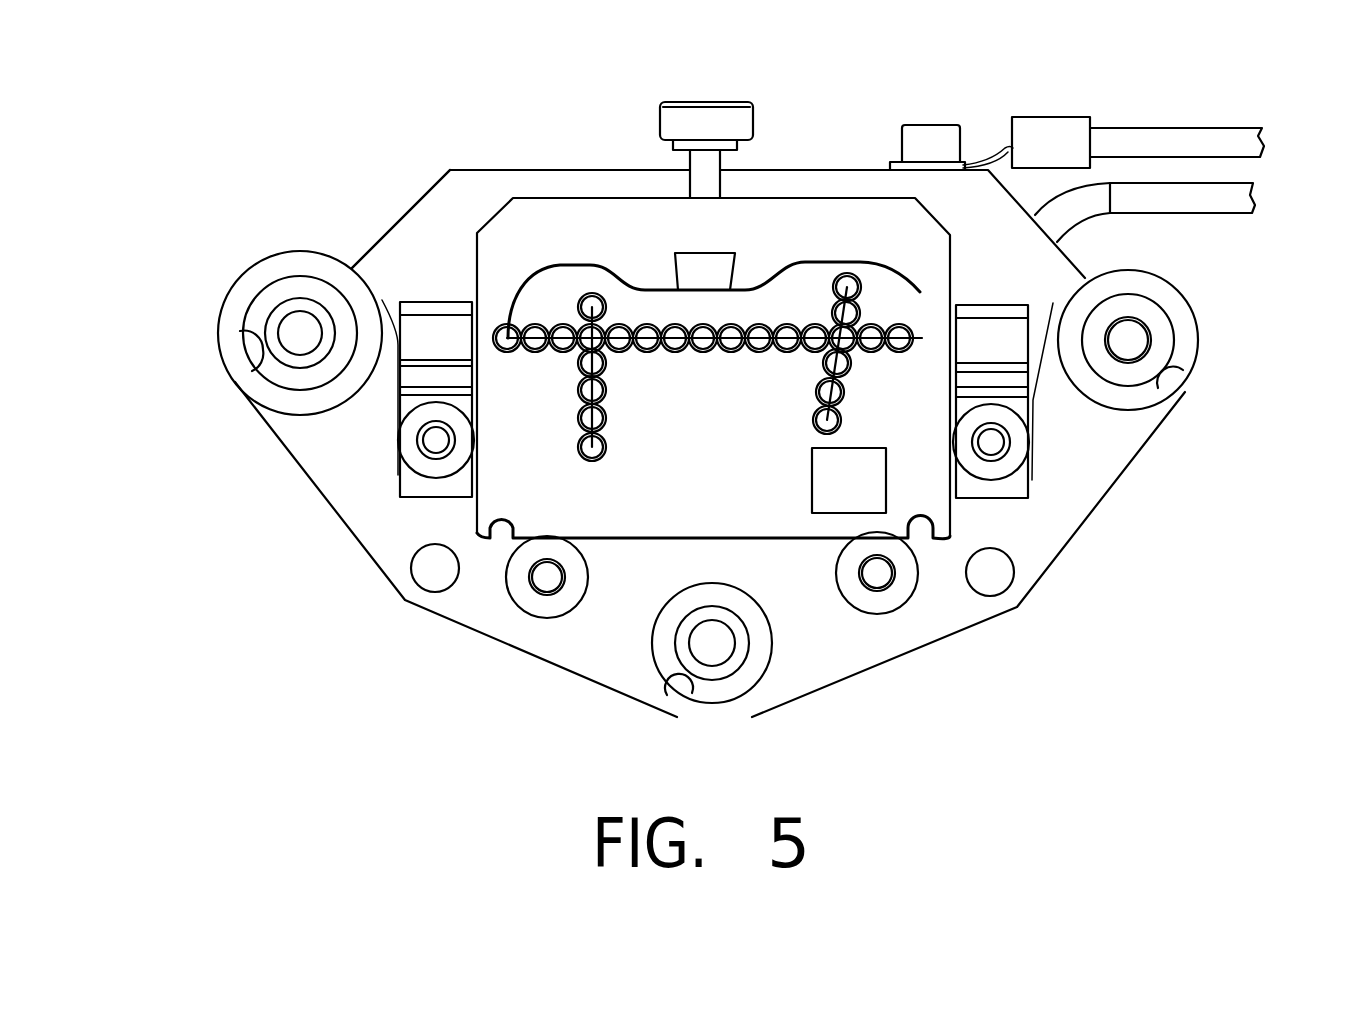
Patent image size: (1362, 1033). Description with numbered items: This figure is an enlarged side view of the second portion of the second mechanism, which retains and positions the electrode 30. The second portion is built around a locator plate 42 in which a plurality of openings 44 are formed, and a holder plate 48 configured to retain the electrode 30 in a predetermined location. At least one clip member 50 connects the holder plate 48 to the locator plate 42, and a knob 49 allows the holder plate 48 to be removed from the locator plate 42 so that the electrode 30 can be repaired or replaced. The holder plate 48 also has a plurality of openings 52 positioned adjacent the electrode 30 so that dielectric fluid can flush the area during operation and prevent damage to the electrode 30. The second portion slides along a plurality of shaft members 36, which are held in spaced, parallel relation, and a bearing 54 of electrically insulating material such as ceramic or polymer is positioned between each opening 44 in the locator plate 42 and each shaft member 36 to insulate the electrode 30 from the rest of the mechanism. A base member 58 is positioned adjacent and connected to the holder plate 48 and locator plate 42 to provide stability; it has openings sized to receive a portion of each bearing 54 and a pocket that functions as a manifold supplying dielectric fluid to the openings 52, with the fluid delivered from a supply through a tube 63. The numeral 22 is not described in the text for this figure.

The cable 22 is at (1048, 117).
The electrode 30 is at (850, 363).
The shaft member 36 is at (295, 335).
The locator plate 42 is at (360, 485).
The opening 44 is at (238, 330).
The holder plate 48 is at (908, 225).
The knob 49 is at (708, 102).
The clip member 50 is at (437, 310).
The opening 52 is at (820, 390).
The bearing 54 is at (277, 377).
The base member 58 is at (467, 168).
The tube 63 is at (1220, 188).